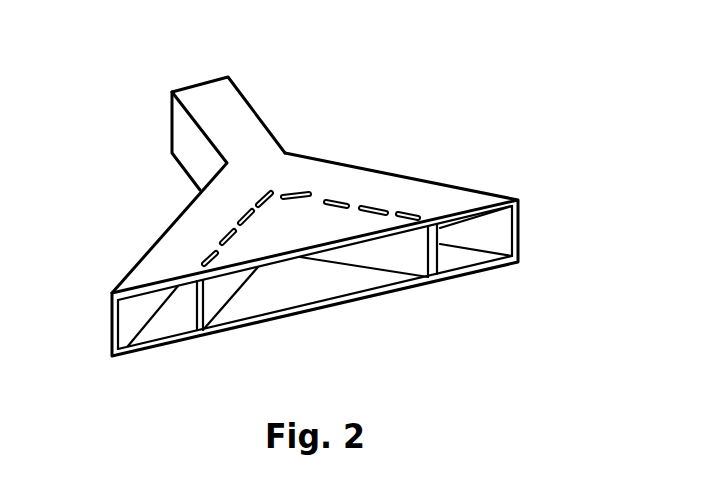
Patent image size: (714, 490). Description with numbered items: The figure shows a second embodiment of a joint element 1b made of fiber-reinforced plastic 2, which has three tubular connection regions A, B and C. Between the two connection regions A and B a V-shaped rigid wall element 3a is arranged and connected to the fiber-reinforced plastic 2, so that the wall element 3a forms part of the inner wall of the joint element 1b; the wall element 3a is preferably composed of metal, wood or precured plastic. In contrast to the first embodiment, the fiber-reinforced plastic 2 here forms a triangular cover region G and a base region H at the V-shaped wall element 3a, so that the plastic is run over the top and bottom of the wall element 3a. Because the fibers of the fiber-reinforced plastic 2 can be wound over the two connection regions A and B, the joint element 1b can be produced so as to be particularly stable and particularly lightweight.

The joint element 1b is at (516, 48).
The fiber-reinforced plastic 2 is at (465, 198).
The V-shaped rigid wall element 3a is at (213, 322).
The connection region A is at (147, 307).
The connection region B is at (497, 244).
The connection region C is at (192, 82).
The triangular cover region G is at (310, 220).
The base region H is at (310, 285).